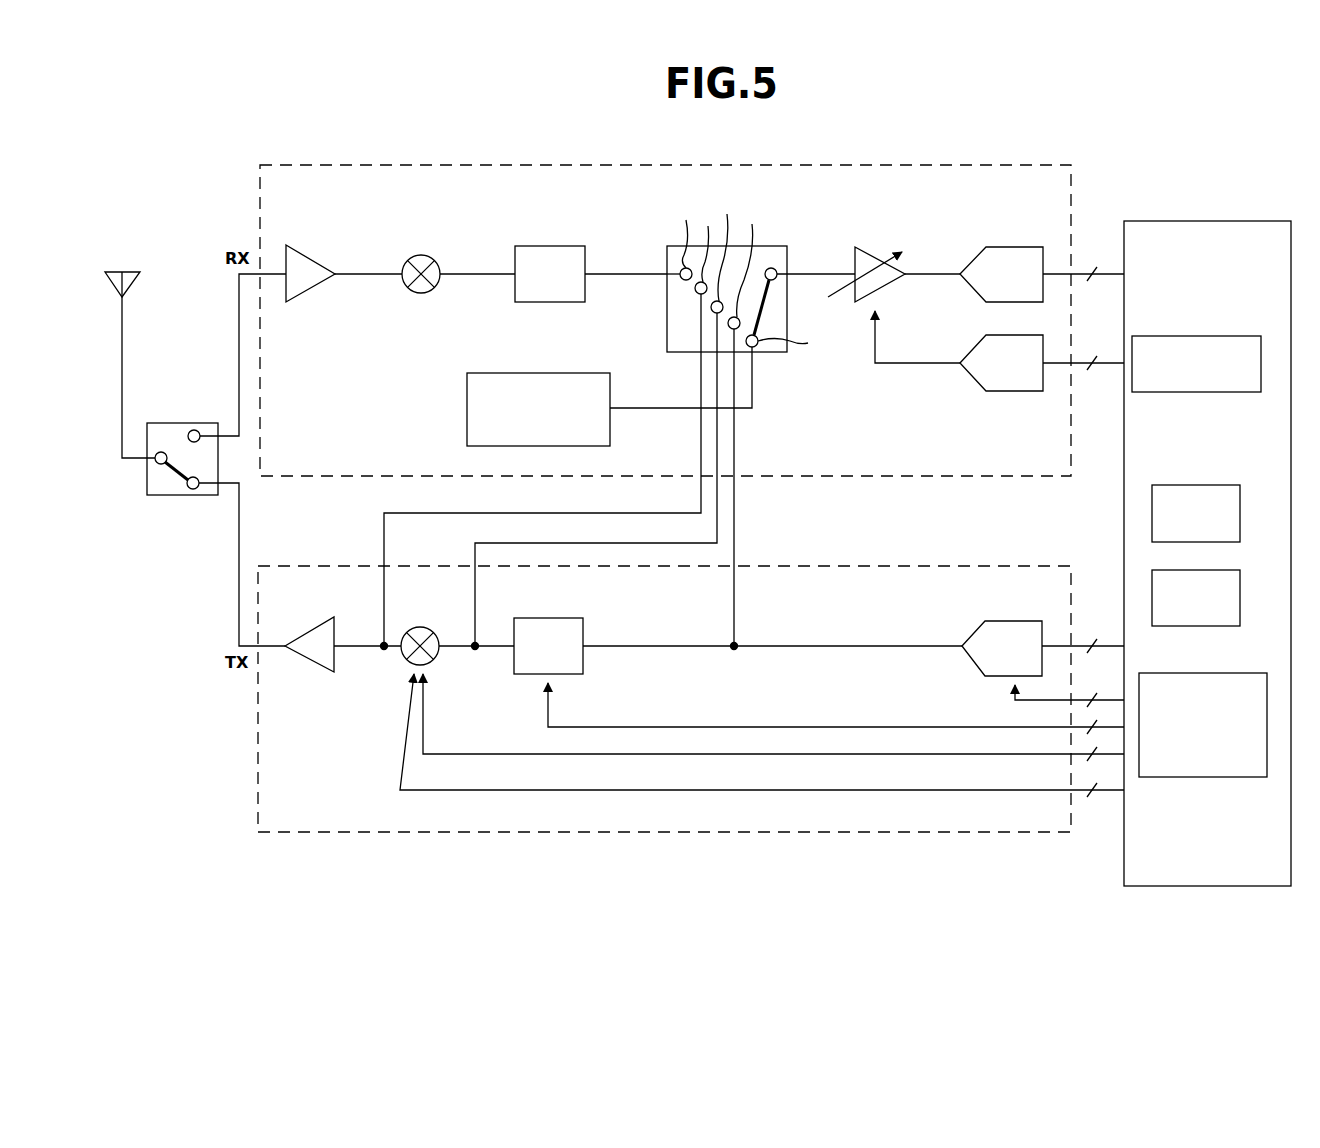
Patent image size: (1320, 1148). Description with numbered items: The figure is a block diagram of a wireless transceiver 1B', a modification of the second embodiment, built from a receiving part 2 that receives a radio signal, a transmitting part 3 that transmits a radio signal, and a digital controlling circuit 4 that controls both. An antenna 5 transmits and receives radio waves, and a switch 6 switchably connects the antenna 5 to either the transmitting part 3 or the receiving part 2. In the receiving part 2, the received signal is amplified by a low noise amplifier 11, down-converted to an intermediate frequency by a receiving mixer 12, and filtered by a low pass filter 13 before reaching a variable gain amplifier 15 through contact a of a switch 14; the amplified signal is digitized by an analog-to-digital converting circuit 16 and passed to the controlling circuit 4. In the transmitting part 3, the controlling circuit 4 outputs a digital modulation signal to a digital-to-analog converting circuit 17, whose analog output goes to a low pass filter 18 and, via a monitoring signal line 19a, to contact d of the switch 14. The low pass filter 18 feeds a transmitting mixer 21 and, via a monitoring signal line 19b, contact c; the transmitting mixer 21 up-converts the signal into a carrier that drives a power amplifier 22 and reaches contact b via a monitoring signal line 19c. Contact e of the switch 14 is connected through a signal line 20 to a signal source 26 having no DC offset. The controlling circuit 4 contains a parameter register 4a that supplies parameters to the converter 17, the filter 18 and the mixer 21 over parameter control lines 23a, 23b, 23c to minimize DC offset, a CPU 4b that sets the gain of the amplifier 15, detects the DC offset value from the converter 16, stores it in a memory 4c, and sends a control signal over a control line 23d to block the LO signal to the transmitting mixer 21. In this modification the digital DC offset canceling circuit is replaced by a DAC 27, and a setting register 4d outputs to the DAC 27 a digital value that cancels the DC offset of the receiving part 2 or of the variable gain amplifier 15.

The wireless transceiver 1B' is at (984, 916).
The receiving part 2 is at (567, 165).
The transmitting part 3 is at (557, 832).
The controlling circuit 4 is at (1232, 221).
The parameter register 4a is at (1215, 777).
The CPU 4b is at (1222, 542).
The memory 4c is at (1222, 626).
The setting register 4d is at (1222, 392).
The antenna 5 is at (137, 280).
The switch 6 is at (170, 495).
The low noise amplifier 11 is at (308, 252).
The receiving mixer 12 is at (421, 255).
The low pass filter 13 is at (552, 246).
The switch 14 is at (779, 246).
The variable gain amplifier 15 is at (868, 250).
The analog-to-digital converting circuit 16 is at (1017, 247).
The digital-to-analog converting circuit 17 is at (1014, 621).
The low pass filter 18 is at (552, 618).
The monitoring signal line 19a is at (734, 542).
The monitoring signal line 19b is at (717, 535).
The monitoring signal line 19c is at (701, 502).
The signal line 20 is at (752, 390).
The transmitting mixer 21 is at (420, 627).
The power amplifier 22 is at (306, 628).
The parameter control line 23a is at (1010, 697).
The parameter control line 23b is at (788, 727).
The parameter control line 23c is at (665, 754).
The control line 23d is at (595, 790).
The signal source having no DC offset 26 is at (500, 373).
The DAC 27 is at (1008, 391).